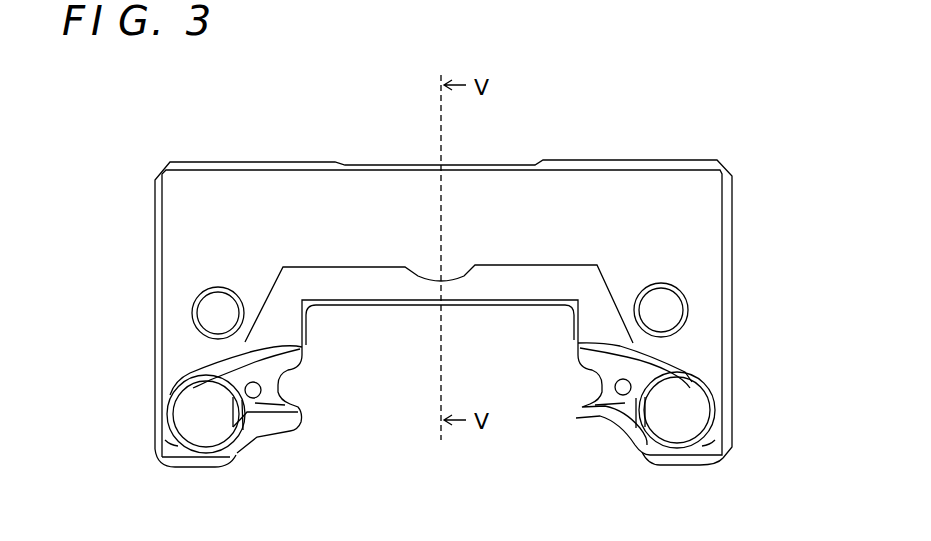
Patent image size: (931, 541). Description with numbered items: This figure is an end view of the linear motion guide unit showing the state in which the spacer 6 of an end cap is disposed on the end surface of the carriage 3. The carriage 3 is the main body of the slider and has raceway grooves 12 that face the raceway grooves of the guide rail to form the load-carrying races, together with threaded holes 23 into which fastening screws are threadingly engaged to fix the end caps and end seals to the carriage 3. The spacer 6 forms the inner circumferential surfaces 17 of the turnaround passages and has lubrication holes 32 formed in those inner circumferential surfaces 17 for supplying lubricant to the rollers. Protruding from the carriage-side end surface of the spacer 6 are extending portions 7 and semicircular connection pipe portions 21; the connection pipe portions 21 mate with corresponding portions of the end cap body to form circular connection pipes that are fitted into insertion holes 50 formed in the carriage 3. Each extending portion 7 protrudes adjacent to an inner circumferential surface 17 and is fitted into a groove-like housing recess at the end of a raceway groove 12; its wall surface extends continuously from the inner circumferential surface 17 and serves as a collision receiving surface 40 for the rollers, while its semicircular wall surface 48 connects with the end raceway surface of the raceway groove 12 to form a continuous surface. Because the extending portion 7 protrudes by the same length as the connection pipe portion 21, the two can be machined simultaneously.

The carriage 3 is at (648, 197).
The spacer 6 is at (548, 280).
The extending portion 7 is at (300, 403).
The raceway groove 12 is at (293, 365).
The inner circumferential surface 17 is at (275, 407).
The connection pipe portion 21 is at (237, 392).
The threaded hole 23 is at (213, 312).
The lubrication hole 32 is at (262, 390).
The collision receiving surface 40 is at (223, 400).
The semicircular wall surface 48 is at (282, 388).
The insertion hole 50 is at (162, 438).